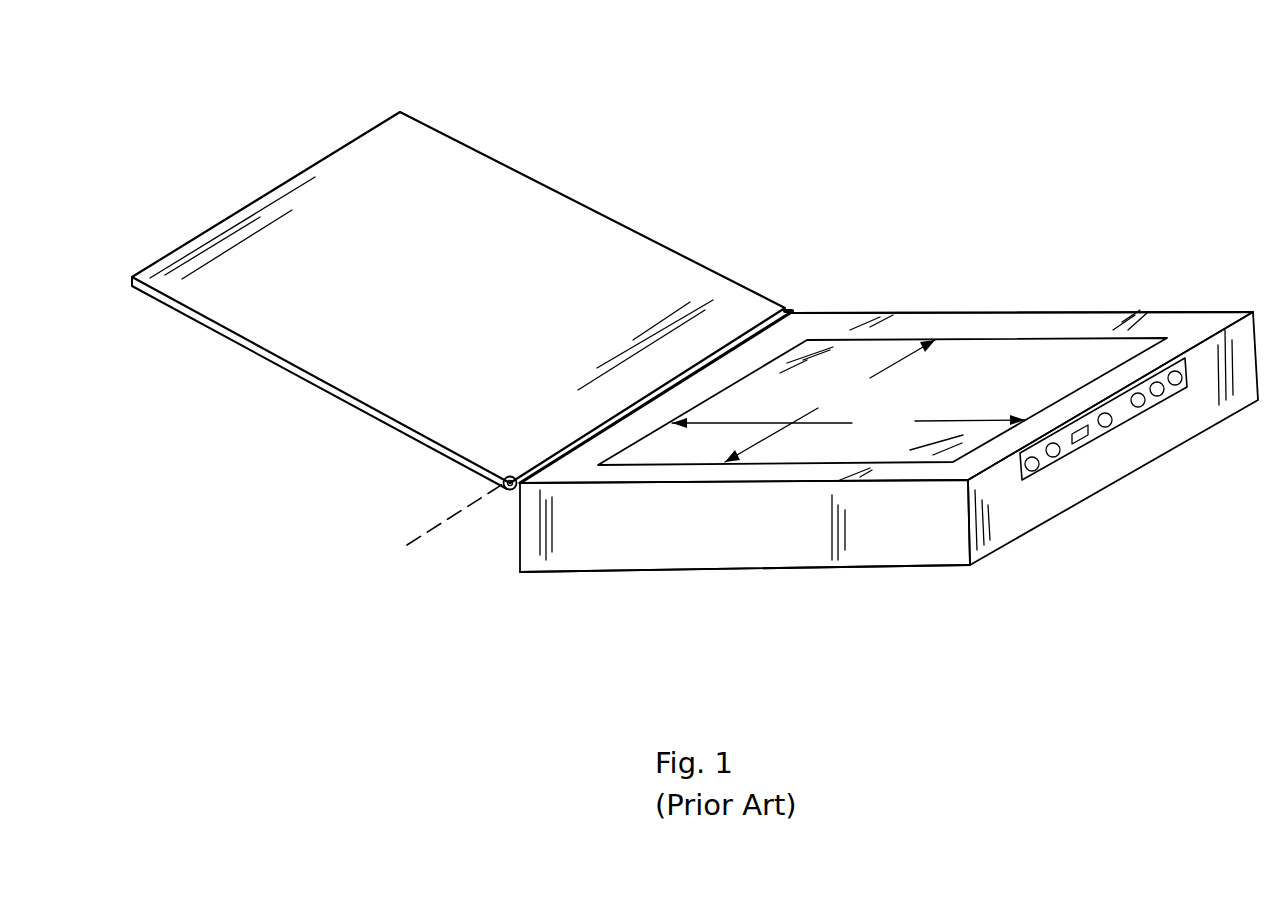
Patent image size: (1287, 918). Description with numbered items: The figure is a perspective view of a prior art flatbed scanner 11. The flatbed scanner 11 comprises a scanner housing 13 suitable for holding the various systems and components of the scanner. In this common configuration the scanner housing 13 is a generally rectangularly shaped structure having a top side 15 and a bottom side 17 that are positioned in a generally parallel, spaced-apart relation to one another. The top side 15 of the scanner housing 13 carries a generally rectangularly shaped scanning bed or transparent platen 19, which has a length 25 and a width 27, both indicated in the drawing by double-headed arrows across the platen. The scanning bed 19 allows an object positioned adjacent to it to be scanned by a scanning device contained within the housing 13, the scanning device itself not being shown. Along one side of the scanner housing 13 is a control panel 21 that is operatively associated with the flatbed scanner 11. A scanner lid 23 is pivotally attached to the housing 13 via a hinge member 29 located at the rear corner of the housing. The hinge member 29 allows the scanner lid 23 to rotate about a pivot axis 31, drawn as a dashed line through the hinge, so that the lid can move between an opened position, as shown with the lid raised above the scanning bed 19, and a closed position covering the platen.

The flatbed scanner 11 is at (186, 80).
The scanner housing 13 is at (708, 577).
The top side 15 is at (910, 272).
The bottom side 17 is at (885, 570).
The scanning bed 19 is at (1027, 390).
The control panel 21 is at (1093, 440).
The scanner lid 23 is at (436, 270).
The length 25 is at (830, 401).
The width 27 is at (848, 424).
The hinge member 29 is at (500, 484).
The pivot axis 31 is at (441, 527).